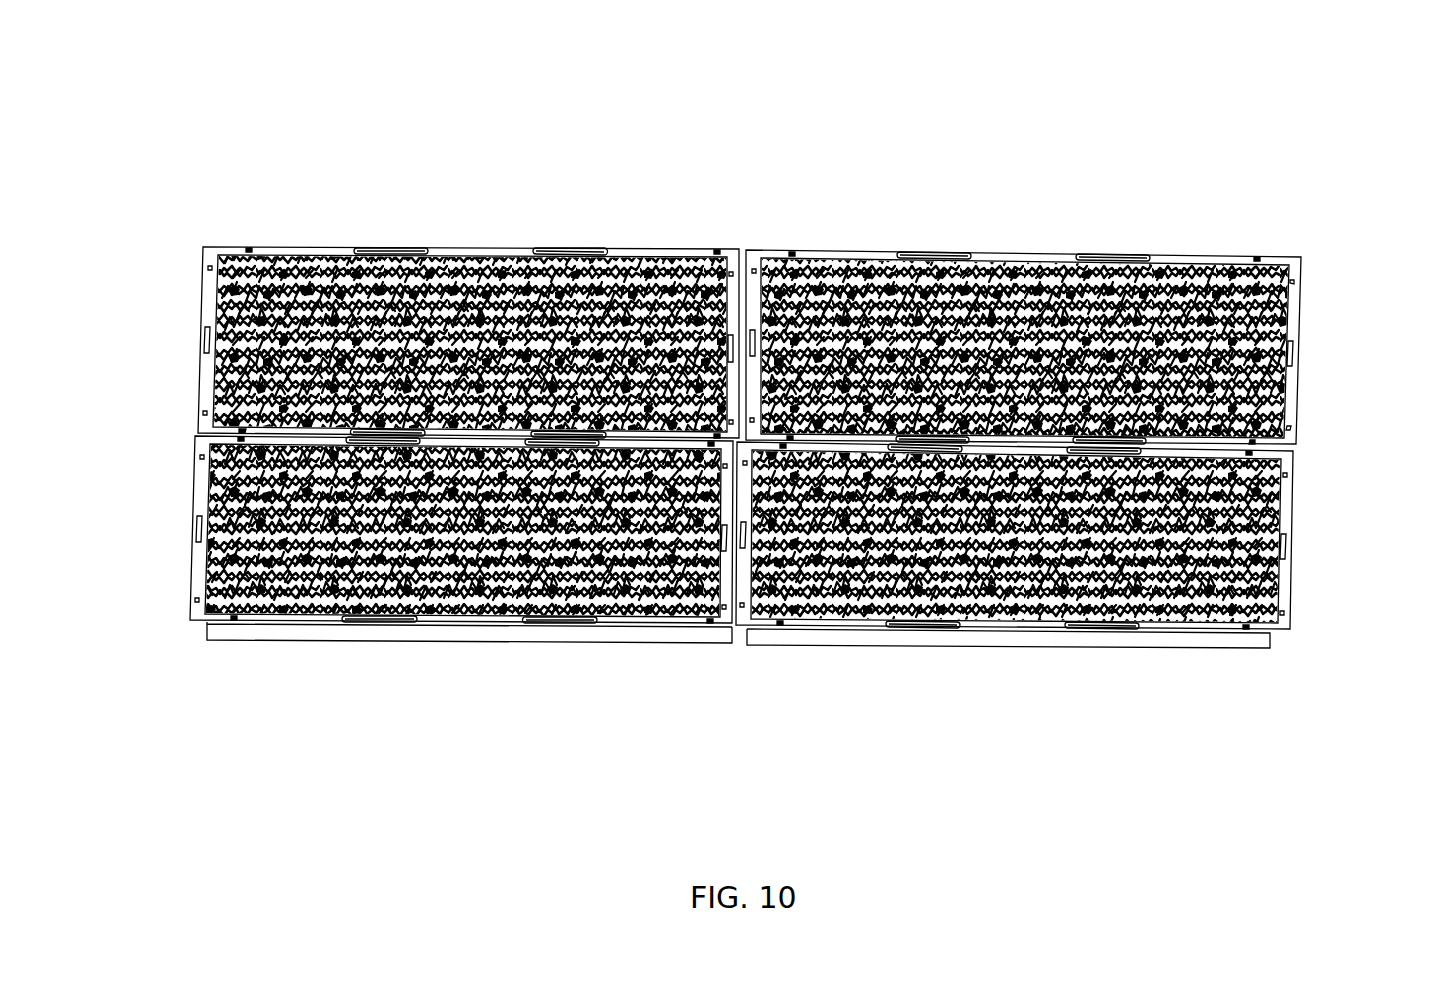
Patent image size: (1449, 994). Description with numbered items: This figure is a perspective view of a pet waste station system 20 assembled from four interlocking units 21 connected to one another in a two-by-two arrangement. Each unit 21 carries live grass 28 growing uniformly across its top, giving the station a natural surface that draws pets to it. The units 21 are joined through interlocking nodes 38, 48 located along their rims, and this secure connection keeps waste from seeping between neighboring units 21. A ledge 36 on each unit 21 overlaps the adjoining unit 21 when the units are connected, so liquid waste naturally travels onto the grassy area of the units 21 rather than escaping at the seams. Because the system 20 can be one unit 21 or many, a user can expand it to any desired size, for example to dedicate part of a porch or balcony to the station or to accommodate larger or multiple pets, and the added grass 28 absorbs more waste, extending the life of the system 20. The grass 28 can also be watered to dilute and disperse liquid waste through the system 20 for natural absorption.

The pet waste station system 20 is at (776, 178).
The unit 21 is at (184, 273).
The live grass 28 is at (1022, 277).
The ledge 36 is at (207, 380).
The interlocking node 38 is at (700, 623).
The interlocking node 48 is at (547, 622).